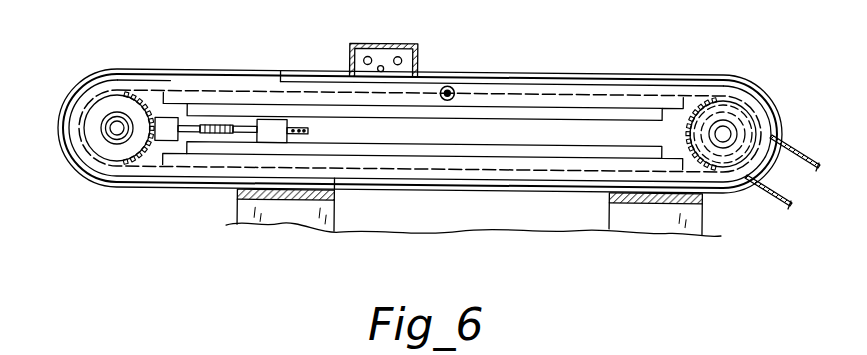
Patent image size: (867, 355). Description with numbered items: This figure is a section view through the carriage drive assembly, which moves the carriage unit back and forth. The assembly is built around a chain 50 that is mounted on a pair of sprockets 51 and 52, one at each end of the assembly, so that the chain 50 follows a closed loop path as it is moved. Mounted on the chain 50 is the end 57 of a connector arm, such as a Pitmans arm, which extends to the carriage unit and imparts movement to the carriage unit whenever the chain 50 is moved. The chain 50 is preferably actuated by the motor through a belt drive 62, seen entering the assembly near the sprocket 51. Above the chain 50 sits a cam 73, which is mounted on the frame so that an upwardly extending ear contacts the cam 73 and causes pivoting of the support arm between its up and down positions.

The chain 50 is at (624, 80).
The sprocket 51 is at (707, 99).
The sprocket 52 is at (116, 118).
The end of connector arm 57 is at (451, 87).
The belt drive 62 is at (784, 140).
The cam 73 is at (384, 63).